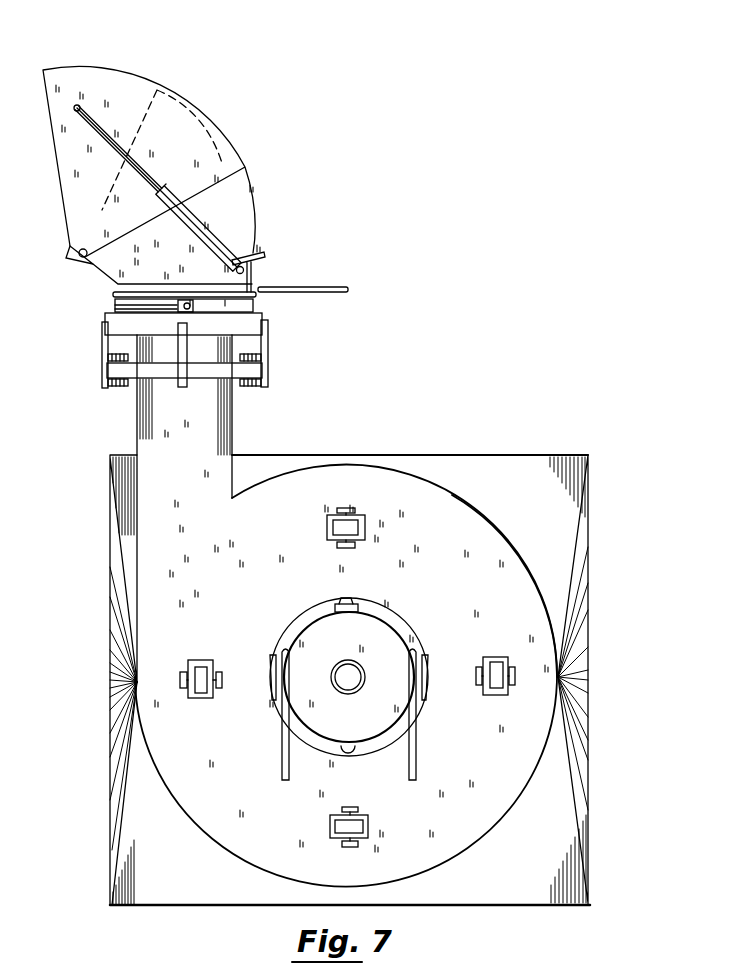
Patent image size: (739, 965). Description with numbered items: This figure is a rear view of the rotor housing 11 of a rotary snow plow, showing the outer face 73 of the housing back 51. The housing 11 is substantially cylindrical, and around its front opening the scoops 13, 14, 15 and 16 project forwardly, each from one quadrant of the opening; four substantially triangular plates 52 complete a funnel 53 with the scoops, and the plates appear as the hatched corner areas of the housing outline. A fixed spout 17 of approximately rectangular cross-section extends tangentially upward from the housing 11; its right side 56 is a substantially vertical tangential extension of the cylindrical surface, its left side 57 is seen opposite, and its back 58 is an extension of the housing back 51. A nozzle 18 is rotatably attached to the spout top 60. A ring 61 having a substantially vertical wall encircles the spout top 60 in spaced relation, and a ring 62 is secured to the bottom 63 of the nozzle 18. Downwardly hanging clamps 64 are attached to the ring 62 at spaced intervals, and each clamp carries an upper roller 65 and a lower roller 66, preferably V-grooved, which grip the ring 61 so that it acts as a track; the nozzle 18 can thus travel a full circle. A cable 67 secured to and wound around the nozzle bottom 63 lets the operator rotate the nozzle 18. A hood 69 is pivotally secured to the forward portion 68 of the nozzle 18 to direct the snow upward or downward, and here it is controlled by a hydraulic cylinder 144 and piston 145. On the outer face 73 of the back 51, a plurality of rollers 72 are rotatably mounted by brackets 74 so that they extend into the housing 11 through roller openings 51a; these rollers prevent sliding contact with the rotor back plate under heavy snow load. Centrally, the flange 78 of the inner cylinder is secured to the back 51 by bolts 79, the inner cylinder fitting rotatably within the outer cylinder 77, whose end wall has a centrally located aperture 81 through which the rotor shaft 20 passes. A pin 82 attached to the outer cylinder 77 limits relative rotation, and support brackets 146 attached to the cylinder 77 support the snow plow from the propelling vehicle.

The hood 69 is at (103, 65).
The piston 145 is at (110, 130).
The hydraulic cylinder 144 is at (197, 217).
The cable 67 is at (317, 287).
The nozzle 18 is at (230, 285).
The forward portion of the nozzle 68 is at (118, 283).
The nozzle bottom 63 is at (255, 307).
The ring 62 is at (103, 313).
The clamp 64 is at (265, 330).
The spout top 60 is at (232, 345).
The upper roller 65 is at (106, 358).
The lower roller 66 is at (104, 382).
The ring 61 is at (153, 380).
The spout 17 is at (147, 415).
The back 58 is at (213, 423).
The left side 57 is at (233, 442).
The right side 56 is at (137, 435).
The triangular plate 52 is at (300, 462).
The back 51 is at (463, 515).
The scoop 13 is at (552, 463).
The scoop 14 is at (103, 478).
The funnel 53 is at (590, 540).
The rotor housing 11 is at (550, 620).
The bracket 74 is at (350, 513).
The roller 72 is at (358, 525).
The roller opening 51a is at (365, 532).
The pin 82 is at (353, 605).
The bolt 79 is at (338, 602).
The aperture 81 is at (337, 665).
The flange 78 is at (413, 630).
The support bracket 146 is at (282, 755).
The rotor shaft 20 is at (353, 690).
The outer cylinder 77 is at (385, 737).
The outer face 73 is at (522, 775).
The scoop 15 is at (152, 900).
The scoop 16 is at (548, 885).